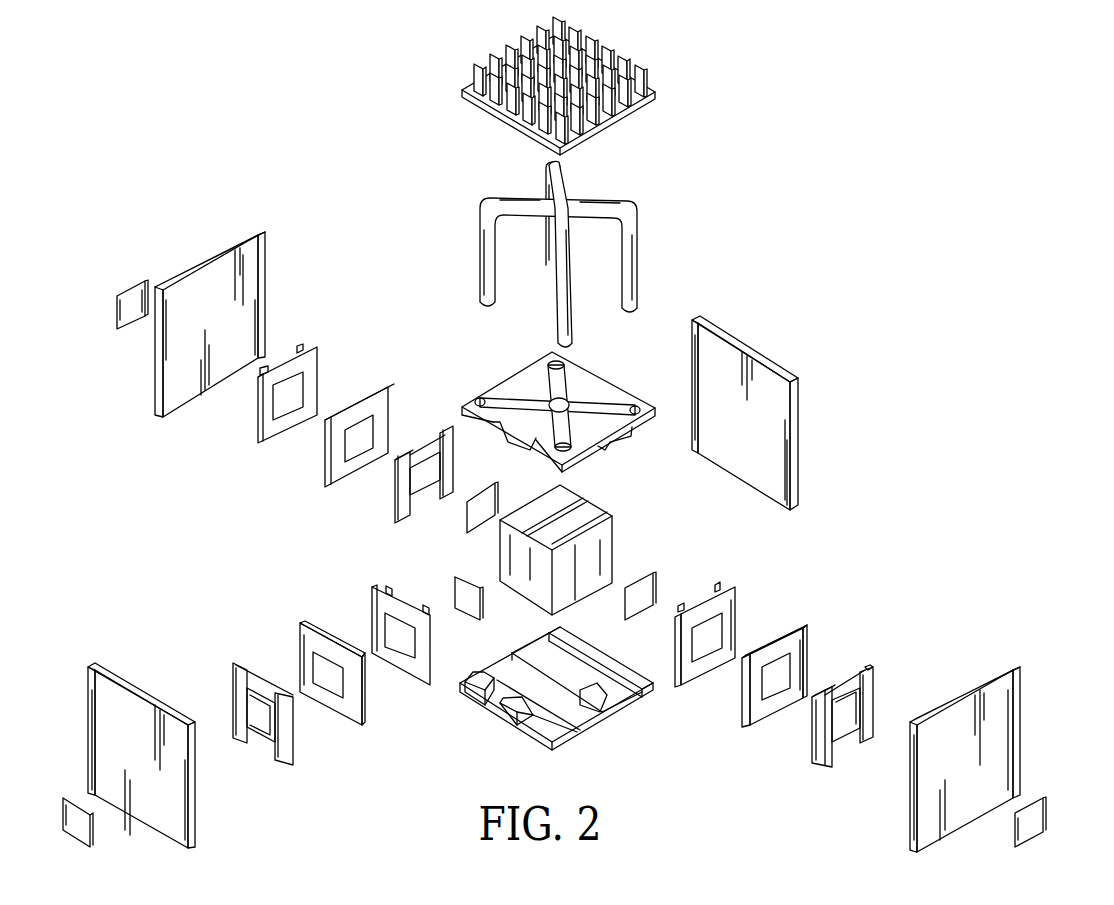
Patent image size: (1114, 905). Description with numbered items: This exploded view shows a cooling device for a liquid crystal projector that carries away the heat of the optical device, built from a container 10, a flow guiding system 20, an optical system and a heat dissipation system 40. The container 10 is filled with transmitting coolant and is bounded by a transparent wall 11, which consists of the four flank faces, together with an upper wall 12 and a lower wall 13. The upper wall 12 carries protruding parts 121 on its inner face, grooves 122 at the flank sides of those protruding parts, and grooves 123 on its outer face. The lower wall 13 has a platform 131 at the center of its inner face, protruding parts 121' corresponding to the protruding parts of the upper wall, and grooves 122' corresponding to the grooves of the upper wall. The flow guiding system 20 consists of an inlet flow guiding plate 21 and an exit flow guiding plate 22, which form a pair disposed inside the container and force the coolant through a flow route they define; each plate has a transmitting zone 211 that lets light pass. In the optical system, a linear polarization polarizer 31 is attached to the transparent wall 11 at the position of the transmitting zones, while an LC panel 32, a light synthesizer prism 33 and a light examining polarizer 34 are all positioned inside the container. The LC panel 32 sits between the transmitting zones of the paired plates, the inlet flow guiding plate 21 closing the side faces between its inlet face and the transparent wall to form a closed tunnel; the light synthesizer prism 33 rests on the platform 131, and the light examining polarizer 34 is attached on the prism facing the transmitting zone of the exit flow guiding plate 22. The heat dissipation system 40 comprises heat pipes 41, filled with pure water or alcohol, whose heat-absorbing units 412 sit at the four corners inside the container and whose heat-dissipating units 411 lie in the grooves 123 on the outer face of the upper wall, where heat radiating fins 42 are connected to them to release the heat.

The container 10 is at (784, 352).
The transparent wall 11 is at (987, 725).
The upper wall 12 is at (592, 387).
The protruding parts 121 is at (560, 460).
The grooves 122 is at (650, 453).
The grooves 123 is at (553, 378).
The lower wall 13 is at (557, 737).
The platform 131 is at (613, 700).
The protruding parts 121' is at (471, 739).
The grooves 122' is at (466, 720).
The flow guiding system 20 is at (894, 662).
The inlet flow guiding plate 21 is at (872, 707).
The transmitting zone 211 is at (842, 713).
The exit flow guiding plate 22 is at (737, 593).
The linear polarization polarizer 31 is at (1032, 822).
The LC panel 32 is at (773, 650).
The light synthesizer prism 33 is at (583, 553).
The light examining polarizer 34 is at (637, 593).
The heat dissipation system 40 is at (680, 170).
The heat pipes 41 is at (640, 205).
The heat-dissipating unit 411 is at (578, 207).
The heat-absorbing unit 412 is at (630, 287).
The heat radiating fins 42 is at (635, 82).